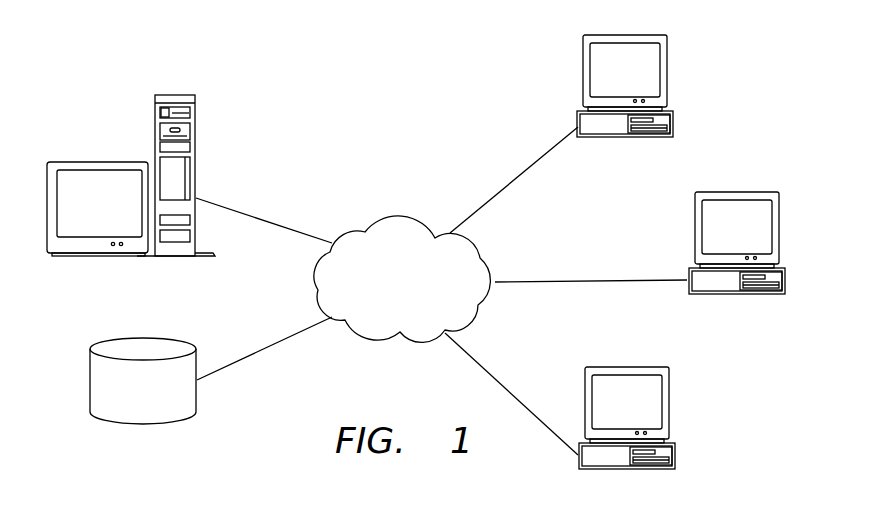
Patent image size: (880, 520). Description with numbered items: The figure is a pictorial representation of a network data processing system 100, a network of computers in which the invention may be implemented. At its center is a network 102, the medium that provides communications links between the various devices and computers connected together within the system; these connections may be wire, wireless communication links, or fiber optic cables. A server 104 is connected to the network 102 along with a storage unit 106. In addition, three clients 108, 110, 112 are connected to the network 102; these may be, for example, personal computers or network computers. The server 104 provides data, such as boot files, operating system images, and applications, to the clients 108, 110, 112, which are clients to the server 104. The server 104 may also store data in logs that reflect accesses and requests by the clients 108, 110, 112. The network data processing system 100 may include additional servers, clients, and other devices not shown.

The network data processing system 100 is at (277, 77).
The network 102 is at (388, 308).
The server 104 is at (155, 117).
The storage unit 106 is at (90, 380).
The client 108 is at (667, 80).
The client 110 is at (777, 230).
The client 112 is at (668, 408).